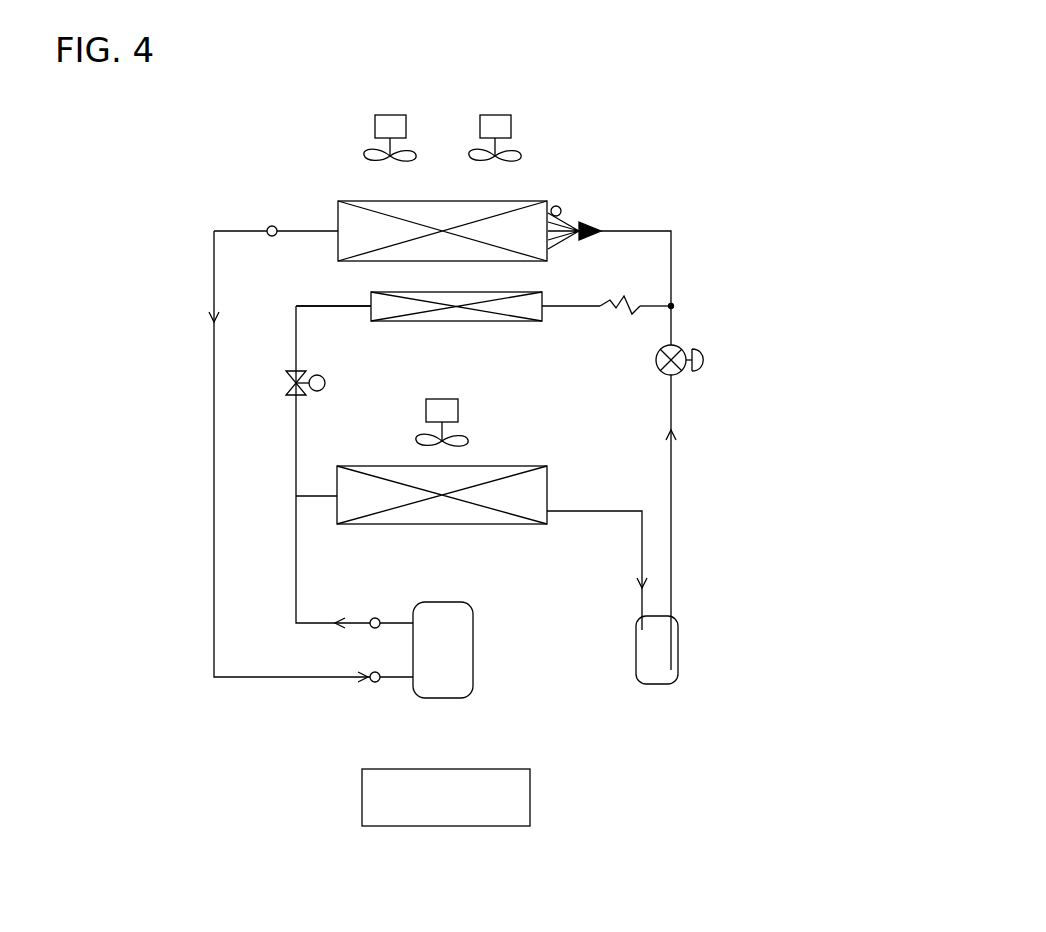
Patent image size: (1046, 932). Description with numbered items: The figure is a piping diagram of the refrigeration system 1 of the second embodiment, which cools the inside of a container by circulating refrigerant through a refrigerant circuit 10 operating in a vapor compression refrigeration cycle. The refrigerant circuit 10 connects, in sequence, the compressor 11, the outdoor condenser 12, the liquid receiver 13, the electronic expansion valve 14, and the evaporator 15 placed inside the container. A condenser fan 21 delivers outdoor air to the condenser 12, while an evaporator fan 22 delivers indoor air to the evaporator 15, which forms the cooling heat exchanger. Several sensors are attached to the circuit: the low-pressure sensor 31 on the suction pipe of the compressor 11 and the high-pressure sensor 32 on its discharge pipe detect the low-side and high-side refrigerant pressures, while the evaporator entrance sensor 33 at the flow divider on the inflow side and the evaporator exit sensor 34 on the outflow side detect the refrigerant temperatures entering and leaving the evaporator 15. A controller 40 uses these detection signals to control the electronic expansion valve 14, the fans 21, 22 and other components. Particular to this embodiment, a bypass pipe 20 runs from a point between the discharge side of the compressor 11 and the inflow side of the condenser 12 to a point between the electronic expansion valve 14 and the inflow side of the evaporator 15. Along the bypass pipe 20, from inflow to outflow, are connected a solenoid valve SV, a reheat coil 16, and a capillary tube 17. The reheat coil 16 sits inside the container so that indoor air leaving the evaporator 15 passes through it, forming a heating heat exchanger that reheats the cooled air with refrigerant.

The refrigeration system 1 is at (700, 86).
The refrigerant circuit 10 is at (178, 334).
The compressor 11 is at (473, 632).
The condenser 12 is at (515, 524).
The liquid receiver 13 is at (679, 622).
The electronic expansion valve 14 is at (683, 350).
The evaporator 15 is at (338, 251).
The reheat coil 16 is at (494, 321).
The capillary tube 17 is at (616, 310).
The bypass pipe 20 is at (343, 306).
The condenser fan 21 is at (458, 410).
The evaporator fan 22 is at (495, 113).
The low-pressure sensor 31 is at (375, 683).
The high-pressure sensor 32 is at (375, 617).
The evaporator entrance sensor 33 is at (557, 206).
The evaporator exit sensor 34 is at (272, 226).
The controller 40 is at (530, 798).
The solenoid valve SV is at (292, 394).